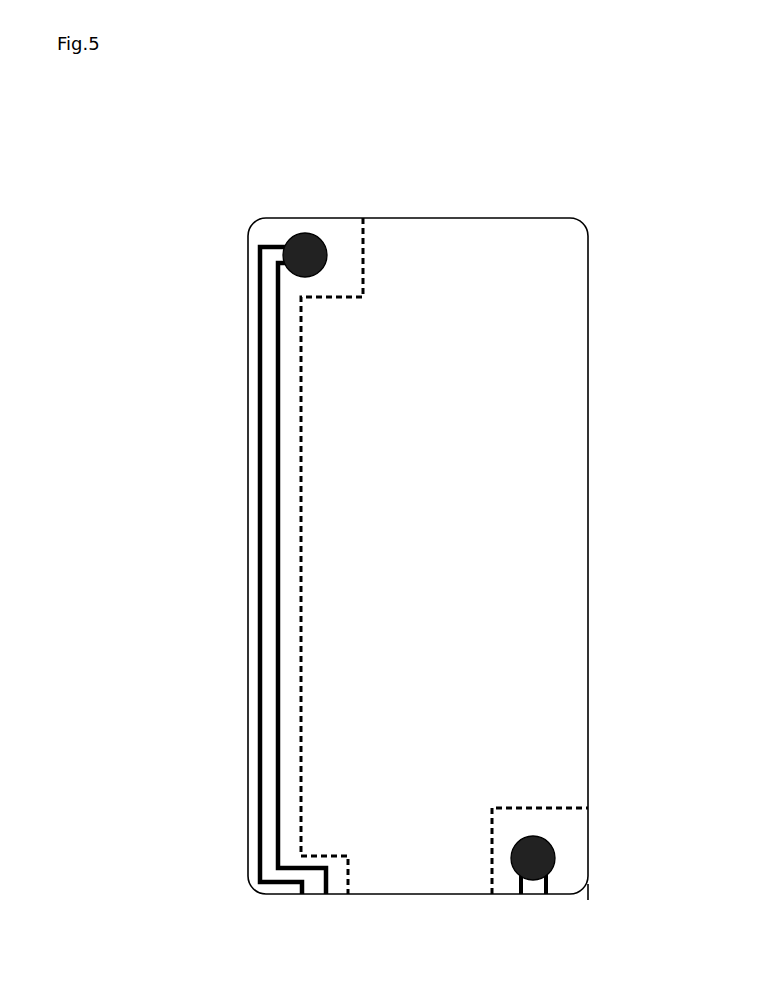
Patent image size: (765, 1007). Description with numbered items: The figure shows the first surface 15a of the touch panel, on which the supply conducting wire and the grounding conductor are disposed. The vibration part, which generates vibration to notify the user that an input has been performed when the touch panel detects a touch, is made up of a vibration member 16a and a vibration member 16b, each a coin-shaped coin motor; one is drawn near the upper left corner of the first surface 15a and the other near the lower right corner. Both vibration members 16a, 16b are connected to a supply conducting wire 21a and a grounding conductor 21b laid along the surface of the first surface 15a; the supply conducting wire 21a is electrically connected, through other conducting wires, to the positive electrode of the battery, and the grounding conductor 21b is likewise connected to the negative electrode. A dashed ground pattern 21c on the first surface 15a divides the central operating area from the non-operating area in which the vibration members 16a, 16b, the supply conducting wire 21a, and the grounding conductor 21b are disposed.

The first surface 15a is at (449, 922).
The vibration member 16a is at (297, 236).
The vibration member 16b is at (555, 858).
The supply conducting wire 21a is at (258, 297).
The grounding conductor 21b is at (276, 326).
The ground pattern 21c is at (362, 250).